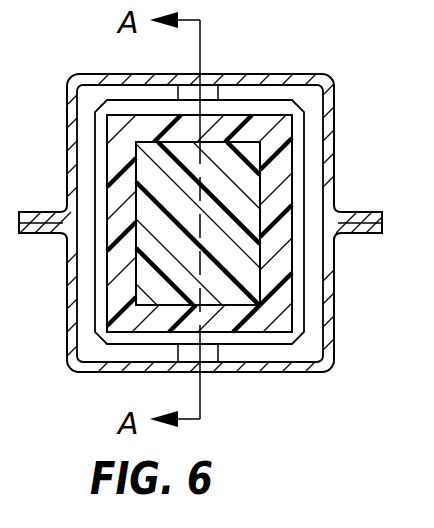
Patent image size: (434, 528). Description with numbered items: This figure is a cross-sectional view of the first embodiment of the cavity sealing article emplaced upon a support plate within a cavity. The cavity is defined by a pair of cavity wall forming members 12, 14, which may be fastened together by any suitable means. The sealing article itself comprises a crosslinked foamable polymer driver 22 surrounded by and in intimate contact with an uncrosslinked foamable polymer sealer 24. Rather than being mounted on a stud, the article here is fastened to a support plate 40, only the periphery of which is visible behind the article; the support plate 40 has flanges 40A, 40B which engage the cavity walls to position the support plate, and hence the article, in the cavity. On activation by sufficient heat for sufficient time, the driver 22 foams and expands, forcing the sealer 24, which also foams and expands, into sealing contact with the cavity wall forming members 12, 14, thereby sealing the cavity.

The cavity wall forming member 12 is at (101, 76).
The cavity wall forming member 14 is at (93, 372).
The crosslinked foamable polymer driver 22 is at (247, 203).
The uncrosslinked foamable polymer sealer 24 is at (282, 168).
The support plate 40 is at (299, 128).
The flange 40A is at (208, 92).
The flange 40B is at (209, 352).